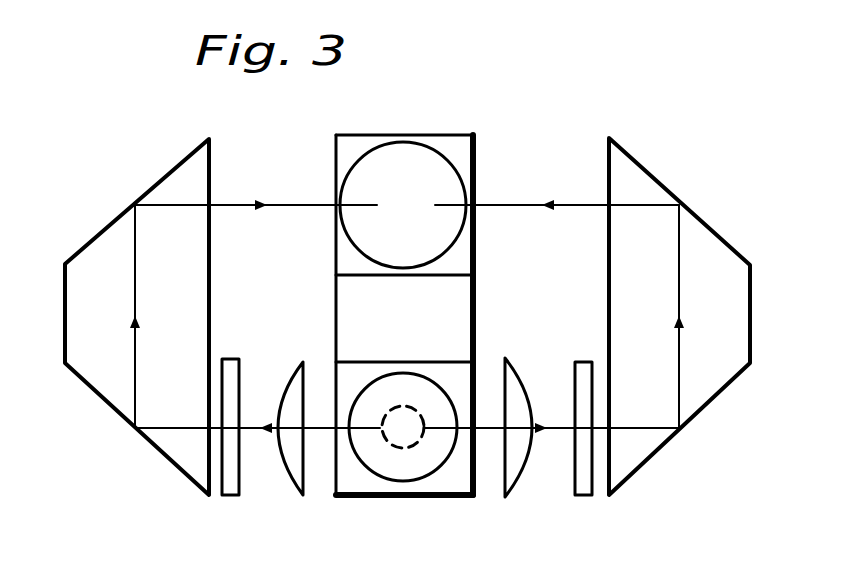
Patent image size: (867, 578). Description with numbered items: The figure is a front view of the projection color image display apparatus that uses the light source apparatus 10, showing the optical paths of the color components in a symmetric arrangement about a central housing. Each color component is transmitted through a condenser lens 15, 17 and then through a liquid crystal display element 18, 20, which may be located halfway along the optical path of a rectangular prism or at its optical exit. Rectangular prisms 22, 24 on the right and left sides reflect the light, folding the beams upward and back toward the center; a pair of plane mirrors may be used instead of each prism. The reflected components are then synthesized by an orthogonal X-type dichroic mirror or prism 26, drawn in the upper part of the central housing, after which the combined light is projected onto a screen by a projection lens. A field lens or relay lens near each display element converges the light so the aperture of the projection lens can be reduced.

The light source apparatus 10 is at (405, 448).
The condenser lens 15 is at (514, 465).
The condenser lens 17 is at (296, 465).
The liquid crystal display element 18 is at (581, 485).
The liquid crystal display element 20 is at (228, 485).
The rectangular prism 22 is at (708, 250).
The rectangular prism 24 is at (183, 183).
The orthogonal X-type dichroic mirror or prism 26 is at (352, 158).